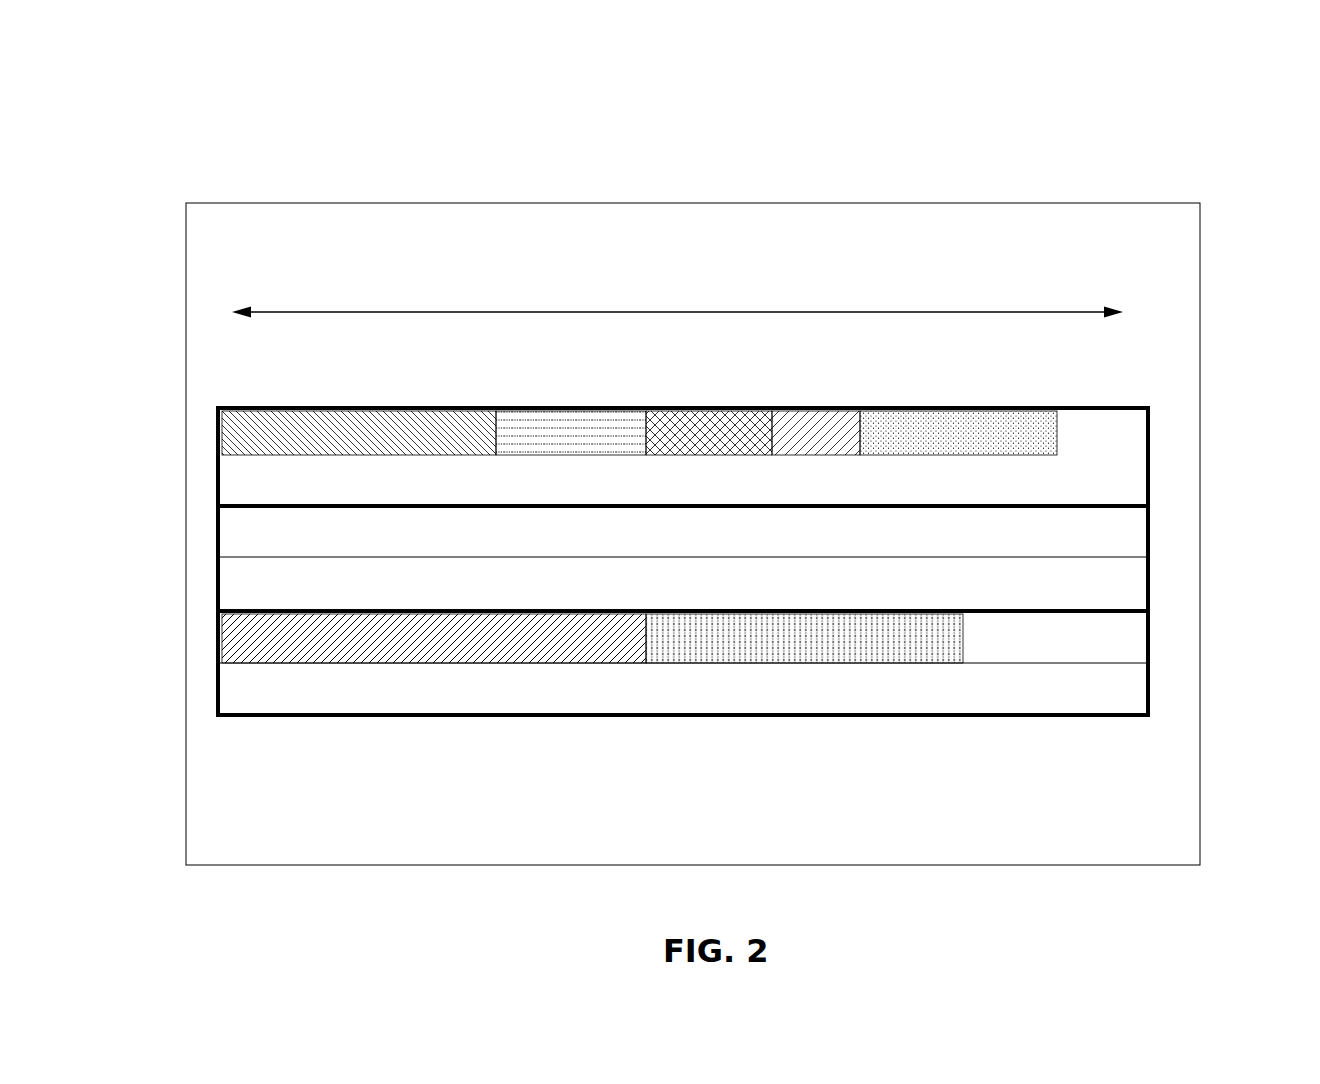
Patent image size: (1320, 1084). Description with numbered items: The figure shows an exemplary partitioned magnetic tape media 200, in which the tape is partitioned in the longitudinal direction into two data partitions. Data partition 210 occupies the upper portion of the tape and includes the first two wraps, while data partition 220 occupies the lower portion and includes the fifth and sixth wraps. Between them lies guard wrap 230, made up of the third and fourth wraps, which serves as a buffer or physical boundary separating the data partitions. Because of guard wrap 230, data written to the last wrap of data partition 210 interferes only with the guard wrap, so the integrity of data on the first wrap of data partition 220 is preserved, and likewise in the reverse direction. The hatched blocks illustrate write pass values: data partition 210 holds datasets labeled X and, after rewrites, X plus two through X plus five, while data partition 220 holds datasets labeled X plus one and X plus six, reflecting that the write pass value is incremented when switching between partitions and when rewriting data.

The partitioned magnetic tape media 200 is at (1238, 124).
The data partition 210 is at (208, 408).
The data partition 220 is at (208, 616).
The guard wrap 230 is at (208, 508).